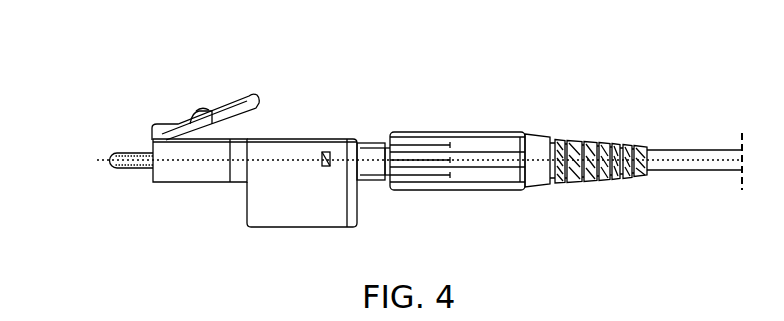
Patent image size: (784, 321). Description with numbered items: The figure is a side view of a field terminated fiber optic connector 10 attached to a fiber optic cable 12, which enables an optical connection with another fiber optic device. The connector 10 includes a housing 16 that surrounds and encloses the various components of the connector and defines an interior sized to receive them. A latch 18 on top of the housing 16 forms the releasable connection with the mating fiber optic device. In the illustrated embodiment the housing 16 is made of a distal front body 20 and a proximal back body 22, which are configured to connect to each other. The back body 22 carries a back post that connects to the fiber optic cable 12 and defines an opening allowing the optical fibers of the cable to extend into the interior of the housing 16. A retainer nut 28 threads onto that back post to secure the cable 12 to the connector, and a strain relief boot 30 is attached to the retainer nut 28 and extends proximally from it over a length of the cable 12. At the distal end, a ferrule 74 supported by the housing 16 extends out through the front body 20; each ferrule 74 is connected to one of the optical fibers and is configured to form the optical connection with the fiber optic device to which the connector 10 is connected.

The fiber optic connector 10 is at (331, 82).
The fiber optic cable 12 is at (712, 150).
The housing 16 is at (301, 119).
The latch 18 is at (227, 113).
The front body 20 is at (187, 168).
The back body 22 is at (362, 148).
The retainer nut 28 is at (497, 138).
The strain relief boot 30 is at (558, 145).
The ferrule 74 is at (97, 145).